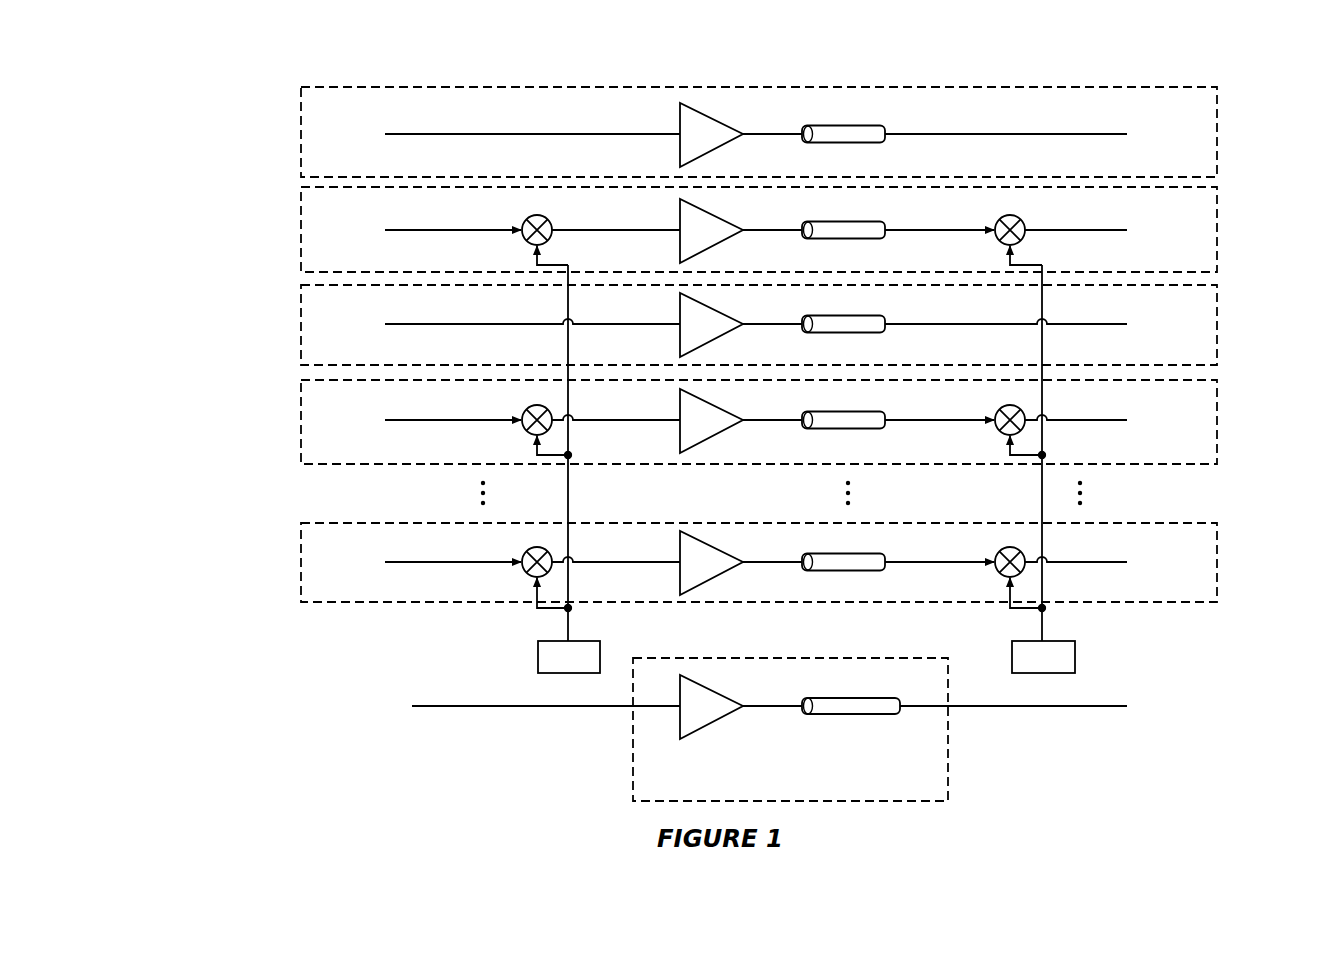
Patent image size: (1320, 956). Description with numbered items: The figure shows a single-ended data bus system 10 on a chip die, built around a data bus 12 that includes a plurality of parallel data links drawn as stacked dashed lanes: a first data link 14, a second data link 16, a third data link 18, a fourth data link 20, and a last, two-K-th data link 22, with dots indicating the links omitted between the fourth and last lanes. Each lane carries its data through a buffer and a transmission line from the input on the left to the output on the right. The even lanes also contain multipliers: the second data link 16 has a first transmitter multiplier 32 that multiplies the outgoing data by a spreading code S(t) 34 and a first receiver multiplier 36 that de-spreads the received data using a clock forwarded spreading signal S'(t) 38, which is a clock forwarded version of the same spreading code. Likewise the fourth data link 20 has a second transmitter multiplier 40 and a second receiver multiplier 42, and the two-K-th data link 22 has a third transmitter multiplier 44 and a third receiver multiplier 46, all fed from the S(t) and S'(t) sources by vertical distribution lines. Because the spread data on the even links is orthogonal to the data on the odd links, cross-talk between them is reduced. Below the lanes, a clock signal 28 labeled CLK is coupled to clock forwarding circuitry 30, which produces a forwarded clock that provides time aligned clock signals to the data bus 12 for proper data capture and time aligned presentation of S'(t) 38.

The single-ended data bus system 10 is at (218, 74).
The data bus 12 is at (212, 110).
The first data link 14 is at (301, 117).
The second data link 16 is at (301, 214).
The third data link 18 is at (301, 305).
The fourth data link 20 is at (301, 398).
The 2K-th data link 22 is at (301, 541).
The clock signal 28 is at (511, 707).
The clock forwarding circuitry 30 is at (880, 729).
The first transmitter multiplier 32 is at (551, 220).
The spreading code S(t) 34 is at (538, 652).
The first receiver multiplier 36 is at (1024, 220).
The clock forwarded spreading signal S'(t) 38 is at (1076, 654).
The second transmitter multiplier 40 is at (524, 411).
The second receiver multiplier 42 is at (998, 411).
The third transmitter multiplier 44 is at (524, 553).
The third receiver multiplier 46 is at (998, 553).